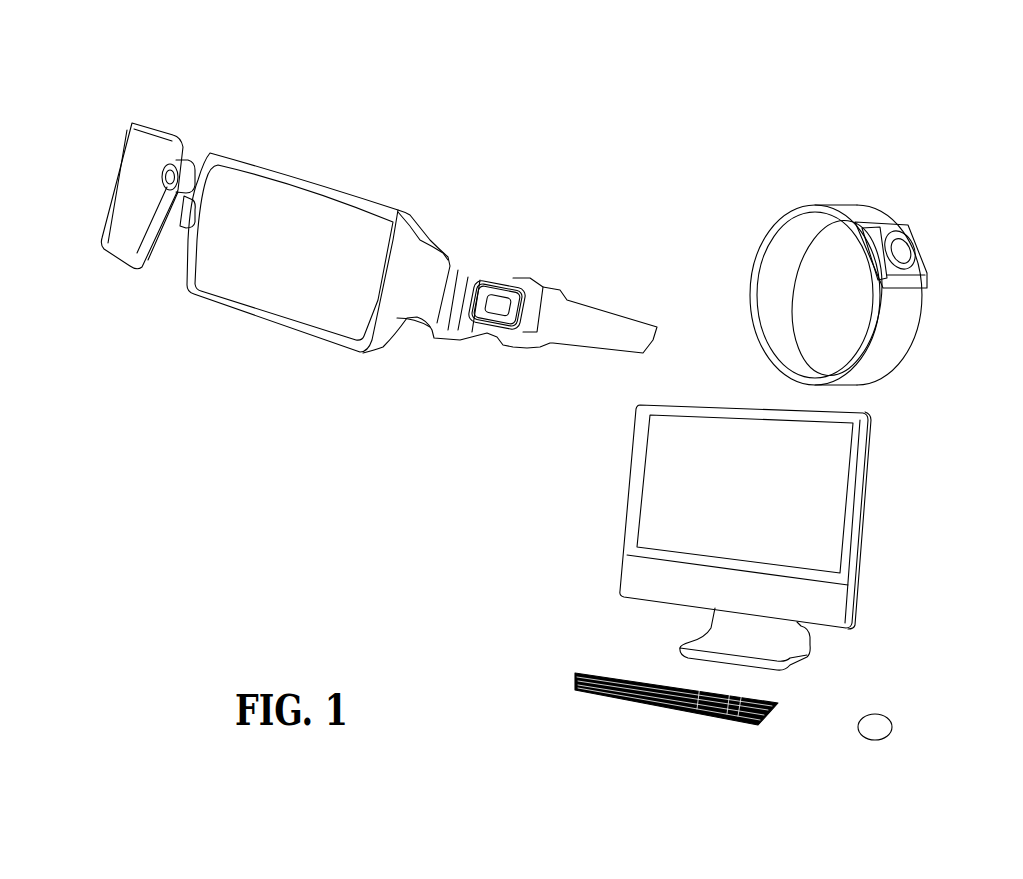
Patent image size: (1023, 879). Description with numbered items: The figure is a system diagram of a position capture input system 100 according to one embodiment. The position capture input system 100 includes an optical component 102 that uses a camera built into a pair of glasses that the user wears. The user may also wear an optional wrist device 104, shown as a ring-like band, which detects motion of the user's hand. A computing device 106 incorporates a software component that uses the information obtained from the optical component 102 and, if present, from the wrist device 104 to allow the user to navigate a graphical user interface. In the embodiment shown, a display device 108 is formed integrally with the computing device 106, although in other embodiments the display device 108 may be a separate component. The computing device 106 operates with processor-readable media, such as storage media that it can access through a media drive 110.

The position capture input system 100 is at (658, 126).
The optical component 102 is at (332, 163).
The wrist device 104 is at (880, 197).
The computing device 106 is at (900, 449).
The display device 108 is at (783, 533).
The media drive 110 is at (863, 517).